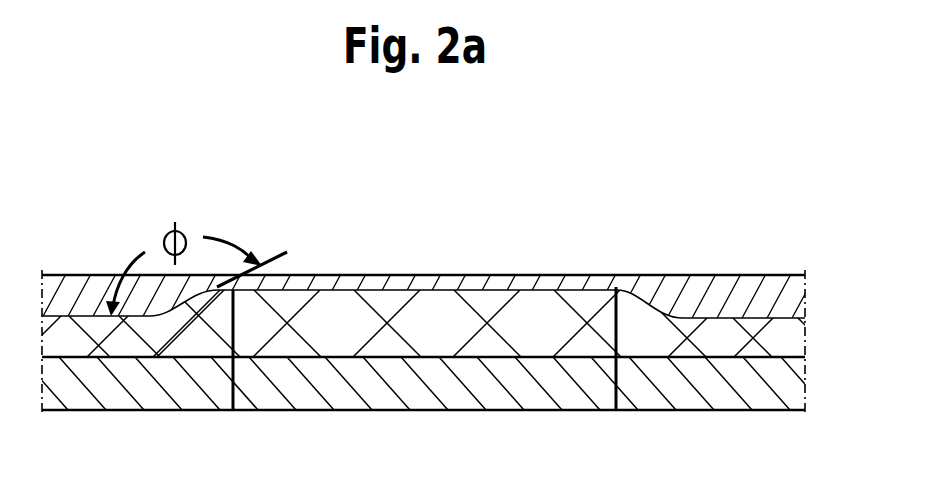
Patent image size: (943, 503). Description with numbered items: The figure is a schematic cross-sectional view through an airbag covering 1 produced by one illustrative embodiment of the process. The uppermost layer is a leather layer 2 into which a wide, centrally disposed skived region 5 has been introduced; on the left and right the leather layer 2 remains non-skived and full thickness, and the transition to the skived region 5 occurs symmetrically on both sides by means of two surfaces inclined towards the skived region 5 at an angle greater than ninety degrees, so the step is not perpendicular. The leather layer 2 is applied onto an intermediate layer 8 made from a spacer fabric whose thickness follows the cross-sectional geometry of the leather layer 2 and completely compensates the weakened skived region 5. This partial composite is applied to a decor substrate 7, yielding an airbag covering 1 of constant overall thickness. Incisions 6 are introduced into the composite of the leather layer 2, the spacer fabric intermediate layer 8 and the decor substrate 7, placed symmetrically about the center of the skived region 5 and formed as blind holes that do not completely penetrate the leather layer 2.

The airbag covering 1 is at (447, 242).
The leather layer 2 is at (718, 298).
The skived region 5 is at (320, 302).
The incisions 6 is at (230, 387).
The decor substrate 7 is at (733, 387).
The intermediate layer 8 is at (773, 340).